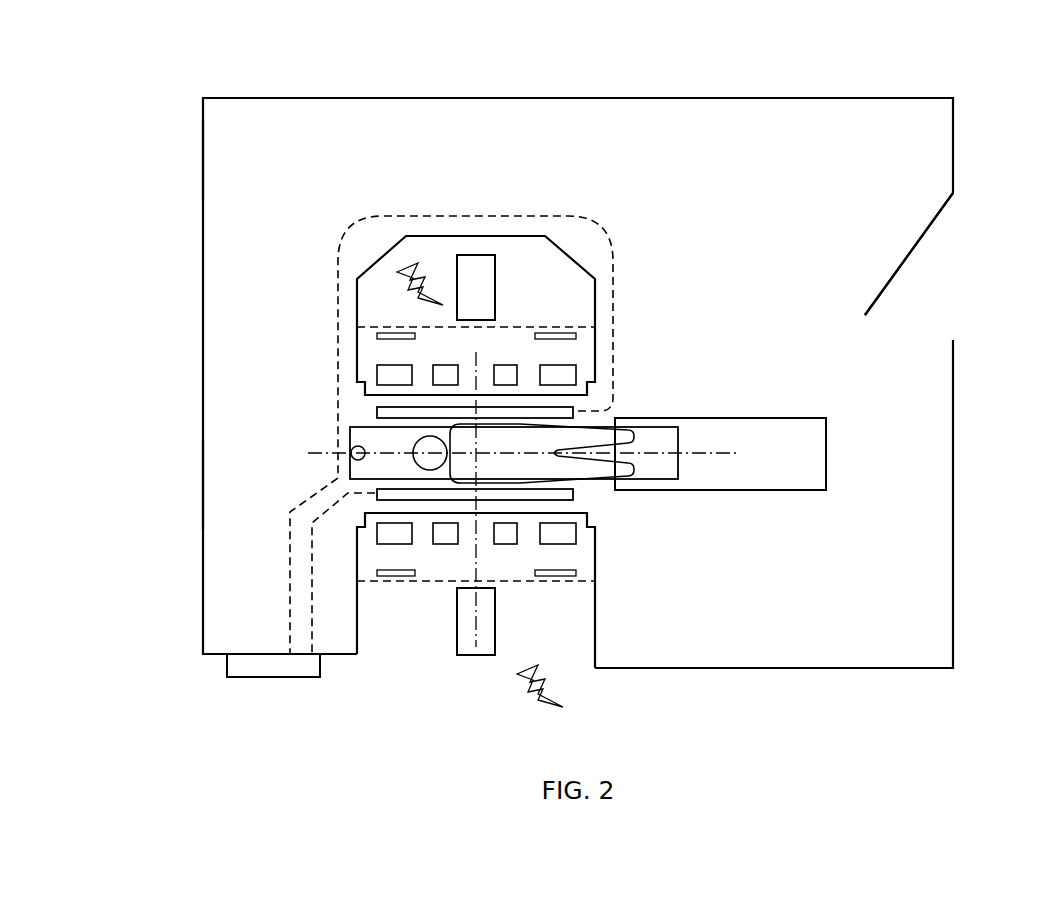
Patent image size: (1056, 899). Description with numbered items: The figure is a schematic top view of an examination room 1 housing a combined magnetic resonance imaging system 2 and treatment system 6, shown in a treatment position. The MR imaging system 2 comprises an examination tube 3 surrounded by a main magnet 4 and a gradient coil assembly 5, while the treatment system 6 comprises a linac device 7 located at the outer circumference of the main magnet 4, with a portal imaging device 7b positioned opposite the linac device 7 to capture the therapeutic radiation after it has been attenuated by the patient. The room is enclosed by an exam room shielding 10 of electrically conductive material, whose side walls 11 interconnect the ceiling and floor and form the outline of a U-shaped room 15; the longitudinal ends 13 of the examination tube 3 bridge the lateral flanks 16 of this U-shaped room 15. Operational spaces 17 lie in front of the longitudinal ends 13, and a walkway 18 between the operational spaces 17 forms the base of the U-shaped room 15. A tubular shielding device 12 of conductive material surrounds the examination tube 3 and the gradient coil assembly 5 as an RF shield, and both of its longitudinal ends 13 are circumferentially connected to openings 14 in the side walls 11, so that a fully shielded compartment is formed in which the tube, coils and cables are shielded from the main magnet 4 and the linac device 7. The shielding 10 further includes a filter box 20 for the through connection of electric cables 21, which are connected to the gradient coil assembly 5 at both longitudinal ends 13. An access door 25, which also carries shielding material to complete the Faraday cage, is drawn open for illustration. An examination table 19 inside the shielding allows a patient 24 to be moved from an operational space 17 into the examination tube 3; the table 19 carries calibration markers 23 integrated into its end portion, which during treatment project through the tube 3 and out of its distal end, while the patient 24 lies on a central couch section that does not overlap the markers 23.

The examination room 1 is at (578, 387).
The magnetic resonance imaging system 2 is at (533, 92).
The examination tube 3 is at (383, 461).
The main magnet 4 is at (372, 350).
The gradient coil assembly 5 is at (380, 412).
The treatment system 6 is at (388, 92).
The linac device 7 is at (479, 265).
The portal imaging device 7b is at (476, 643).
The exam room shielding 10 is at (957, 588).
The side walls 11 is at (797, 95).
The tubular shielding device 12 is at (363, 393).
The longitudinal ends 13 is at (620, 410).
The openings 14 is at (357, 382).
The U-shaped room 15 is at (673, 92).
The lateral flanks 16 is at (727, 672).
The operational spaces 17 is at (245, 485).
The walkway 18 is at (245, 160).
The examination table 19 is at (660, 435).
The filter box 20 is at (230, 668).
The electric cables 21 is at (300, 567).
The calibration markers 23 is at (356, 449).
The patient 24 is at (597, 470).
The access door 25 is at (900, 262).